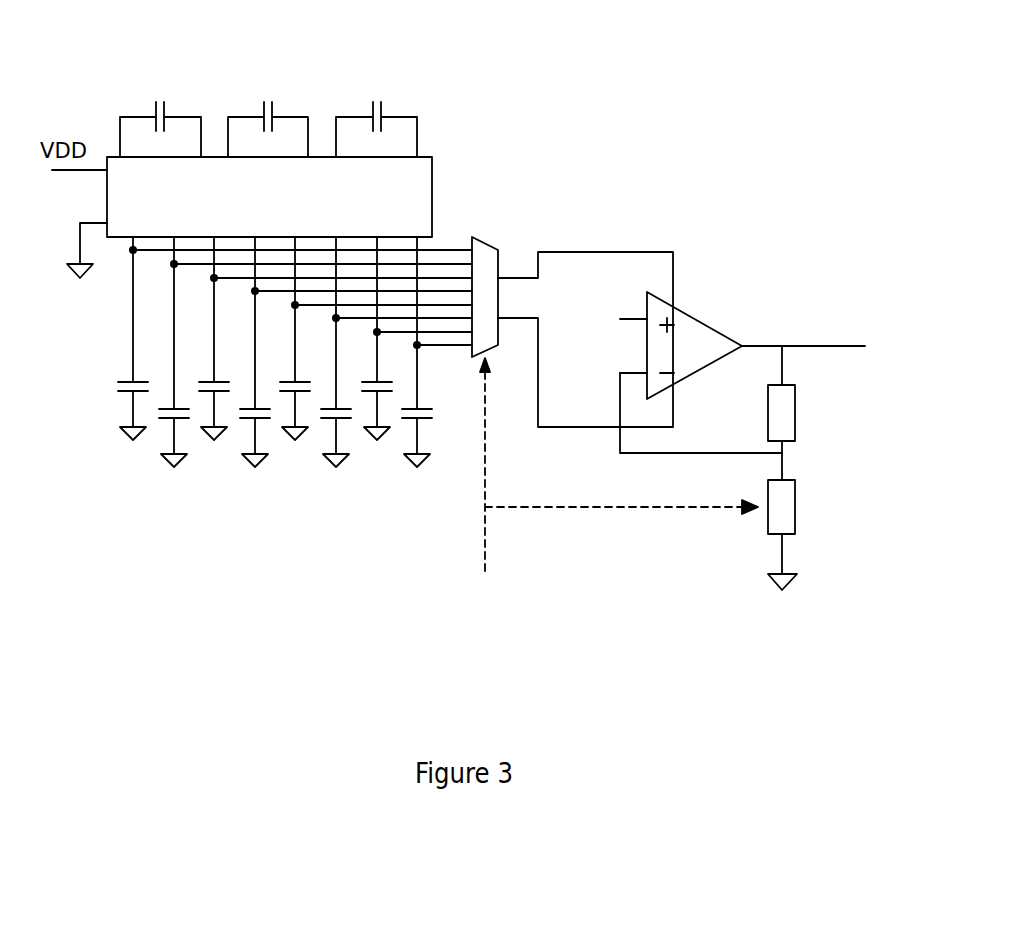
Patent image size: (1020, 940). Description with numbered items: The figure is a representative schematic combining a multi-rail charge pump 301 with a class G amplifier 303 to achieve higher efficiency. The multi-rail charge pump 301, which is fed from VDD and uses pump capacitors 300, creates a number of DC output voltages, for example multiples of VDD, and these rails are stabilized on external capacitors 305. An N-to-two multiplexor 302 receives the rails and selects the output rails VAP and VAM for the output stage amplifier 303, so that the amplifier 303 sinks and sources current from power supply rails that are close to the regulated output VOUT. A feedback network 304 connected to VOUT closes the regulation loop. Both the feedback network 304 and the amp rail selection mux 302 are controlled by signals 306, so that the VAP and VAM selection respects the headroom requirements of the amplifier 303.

The pump capacitors 300 is at (418, 90).
The multi-rail charge pump 301 is at (432, 182).
The N-to-2 multiplexor 302 is at (485, 238).
The class G amplifier 303 is at (702, 317).
The feedback network 304 is at (808, 548).
The external capacitors 305 is at (432, 467).
The signals 306 is at (595, 466).